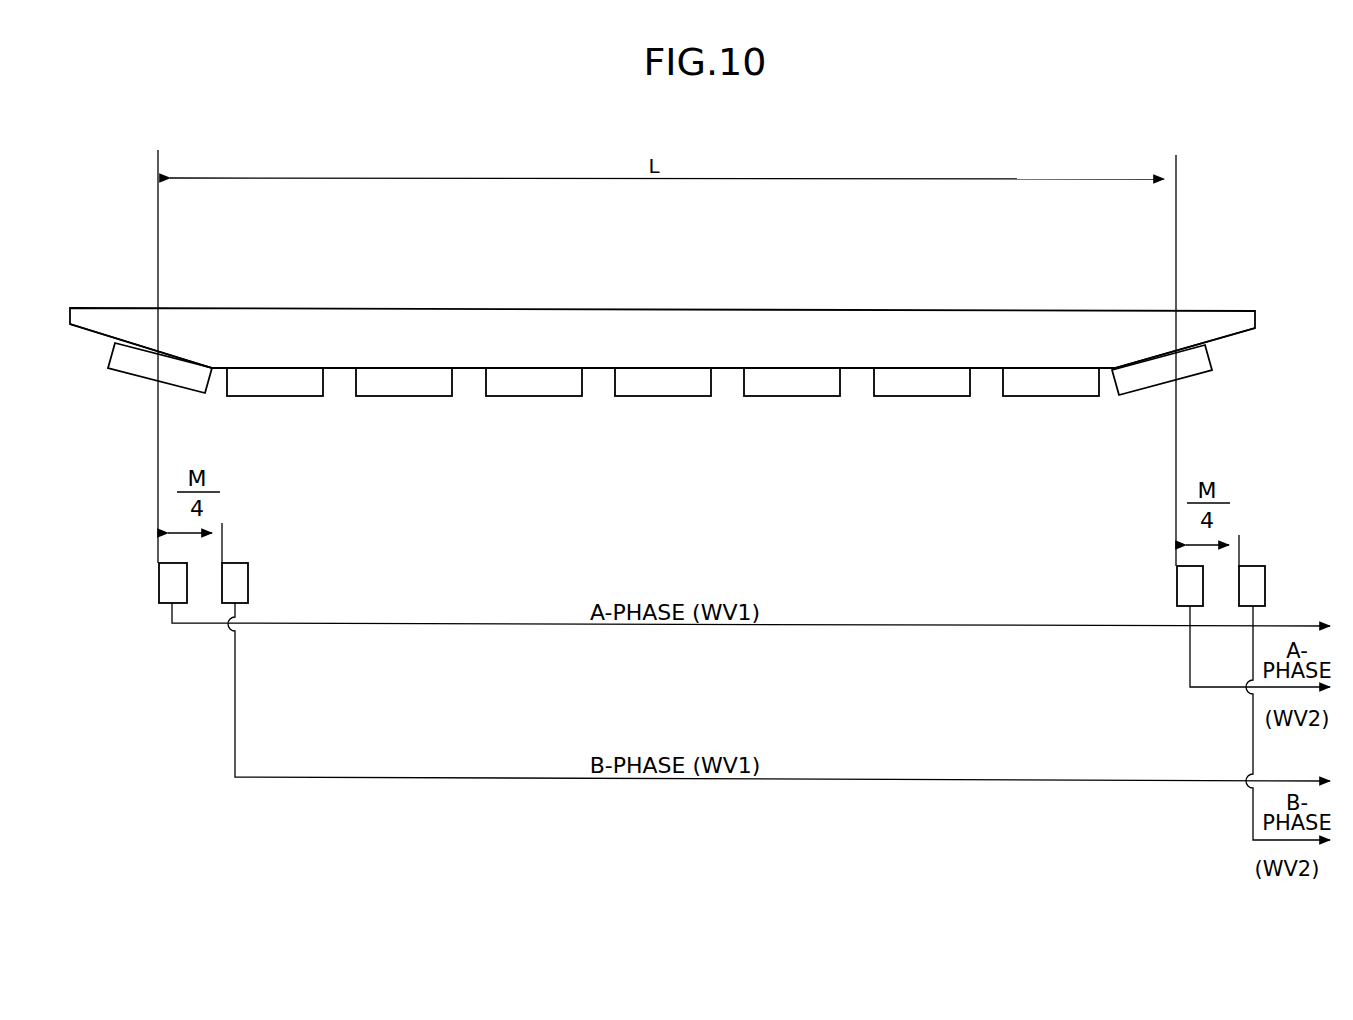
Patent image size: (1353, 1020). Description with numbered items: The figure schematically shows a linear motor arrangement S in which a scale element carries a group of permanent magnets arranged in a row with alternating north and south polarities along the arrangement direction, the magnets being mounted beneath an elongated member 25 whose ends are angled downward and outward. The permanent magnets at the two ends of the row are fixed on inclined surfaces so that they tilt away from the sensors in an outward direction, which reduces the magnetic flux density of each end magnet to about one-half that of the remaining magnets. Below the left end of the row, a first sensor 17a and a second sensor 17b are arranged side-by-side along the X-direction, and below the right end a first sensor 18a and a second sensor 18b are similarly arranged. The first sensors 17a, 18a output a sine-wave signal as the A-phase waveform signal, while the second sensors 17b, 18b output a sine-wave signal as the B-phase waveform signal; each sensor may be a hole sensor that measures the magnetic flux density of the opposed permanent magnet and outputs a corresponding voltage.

The back yoke plate 25 is at (1224, 311).
The first sensor 17a is at (170, 578).
The second sensor 17b is at (238, 582).
The first sensor 18a is at (1187, 588).
The second sensor 18b is at (1257, 588).
The magnetic scale S is at (1278, 164).